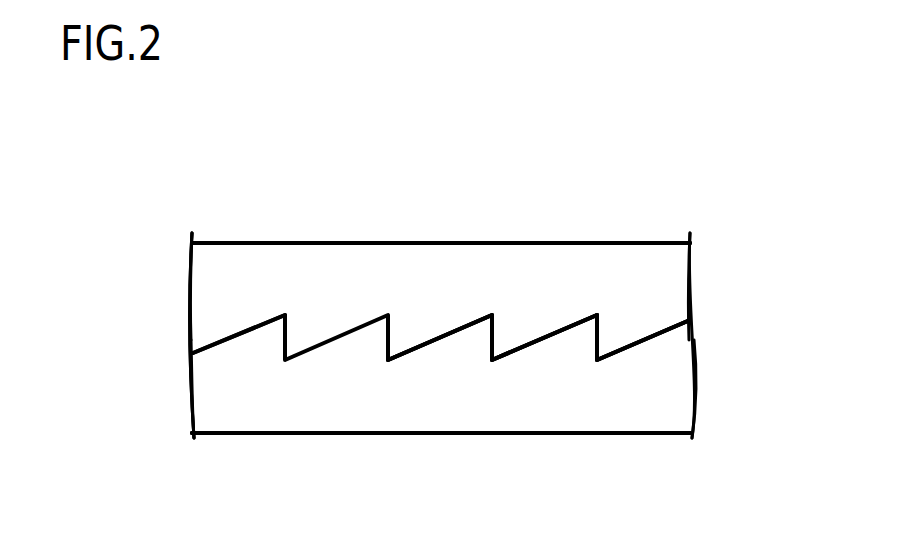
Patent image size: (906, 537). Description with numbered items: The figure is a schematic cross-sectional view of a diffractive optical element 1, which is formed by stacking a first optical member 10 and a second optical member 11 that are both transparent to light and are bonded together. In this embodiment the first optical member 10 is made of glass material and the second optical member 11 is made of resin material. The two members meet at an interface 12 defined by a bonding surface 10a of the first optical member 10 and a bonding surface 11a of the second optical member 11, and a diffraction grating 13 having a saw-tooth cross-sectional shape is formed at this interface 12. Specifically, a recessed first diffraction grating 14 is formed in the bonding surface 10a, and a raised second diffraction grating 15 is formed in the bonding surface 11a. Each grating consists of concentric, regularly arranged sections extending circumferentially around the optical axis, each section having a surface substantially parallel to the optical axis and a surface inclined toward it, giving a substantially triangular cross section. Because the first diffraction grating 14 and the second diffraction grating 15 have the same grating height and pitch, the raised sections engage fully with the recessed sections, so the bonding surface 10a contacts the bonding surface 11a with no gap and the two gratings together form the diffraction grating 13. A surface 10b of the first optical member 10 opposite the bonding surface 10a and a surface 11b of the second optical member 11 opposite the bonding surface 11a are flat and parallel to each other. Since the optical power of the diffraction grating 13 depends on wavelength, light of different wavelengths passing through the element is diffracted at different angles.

The diffractive optical element 1 is at (602, 138).
The first optical member 10 is at (667, 242).
The bonding surface of the first optical member 10a is at (217, 345).
The surface of the first optical member 10b is at (292, 243).
The second optical member 11 is at (658, 433).
The bonding surface of the second optical member 11a is at (244, 330).
The surface of the second optical member 11b is at (298, 433).
The interface 12 is at (658, 336).
The diffraction grating 13 is at (610, 333).
The first diffraction grating 14 is at (528, 347).
The second diffraction grating 15 is at (563, 327).